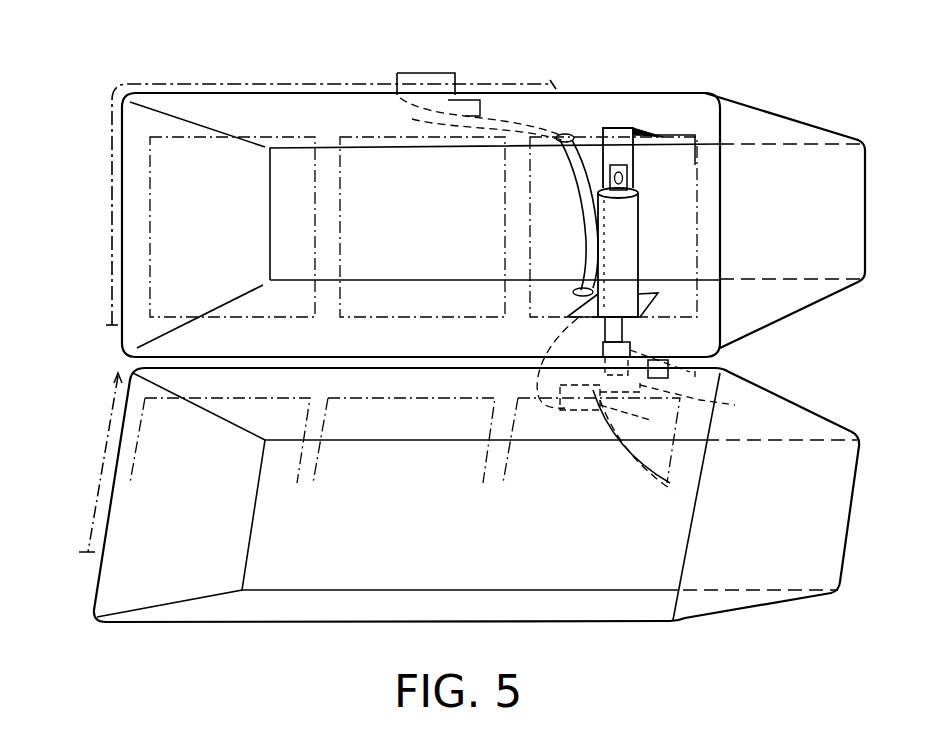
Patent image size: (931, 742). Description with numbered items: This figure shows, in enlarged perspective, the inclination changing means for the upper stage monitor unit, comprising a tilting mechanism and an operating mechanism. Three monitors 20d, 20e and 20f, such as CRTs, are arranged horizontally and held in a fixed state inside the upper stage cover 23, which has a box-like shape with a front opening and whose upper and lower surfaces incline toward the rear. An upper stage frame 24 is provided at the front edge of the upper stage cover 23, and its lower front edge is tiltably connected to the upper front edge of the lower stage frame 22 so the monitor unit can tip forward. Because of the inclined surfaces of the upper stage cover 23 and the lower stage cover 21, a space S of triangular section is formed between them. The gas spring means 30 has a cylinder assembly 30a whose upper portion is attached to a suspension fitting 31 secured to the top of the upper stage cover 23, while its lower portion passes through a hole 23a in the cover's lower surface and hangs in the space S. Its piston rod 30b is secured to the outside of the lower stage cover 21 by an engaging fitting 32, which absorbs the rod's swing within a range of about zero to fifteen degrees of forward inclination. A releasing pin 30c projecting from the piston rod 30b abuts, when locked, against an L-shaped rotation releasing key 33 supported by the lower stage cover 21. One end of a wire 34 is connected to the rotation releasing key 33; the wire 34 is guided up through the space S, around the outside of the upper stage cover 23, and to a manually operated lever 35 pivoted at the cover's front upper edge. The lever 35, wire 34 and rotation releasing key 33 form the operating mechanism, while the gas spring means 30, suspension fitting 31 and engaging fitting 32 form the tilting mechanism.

The monitor 20d is at (150, 187).
The monitor 20e is at (340, 250).
The monitor 20f is at (677, 137).
The lower stage cover 21 is at (822, 417).
The lower stage frame 22 is at (117, 393).
The upper stage cover 23 is at (828, 143).
The hole 23a is at (652, 290).
The upper stage frame 24 is at (248, 88).
The gas spring means 30 is at (650, 227).
The cylinder assembly 30a is at (617, 150).
The piston rod 30b is at (628, 335).
The releasing pin 30c is at (660, 402).
The suspension fitting 31 is at (697, 135).
The engaging fitting 32 is at (725, 374).
The rotation releasing key 33 is at (652, 429).
The wire 34 is at (605, 447).
The lever 35 is at (398, 75).
The space S is at (780, 333).